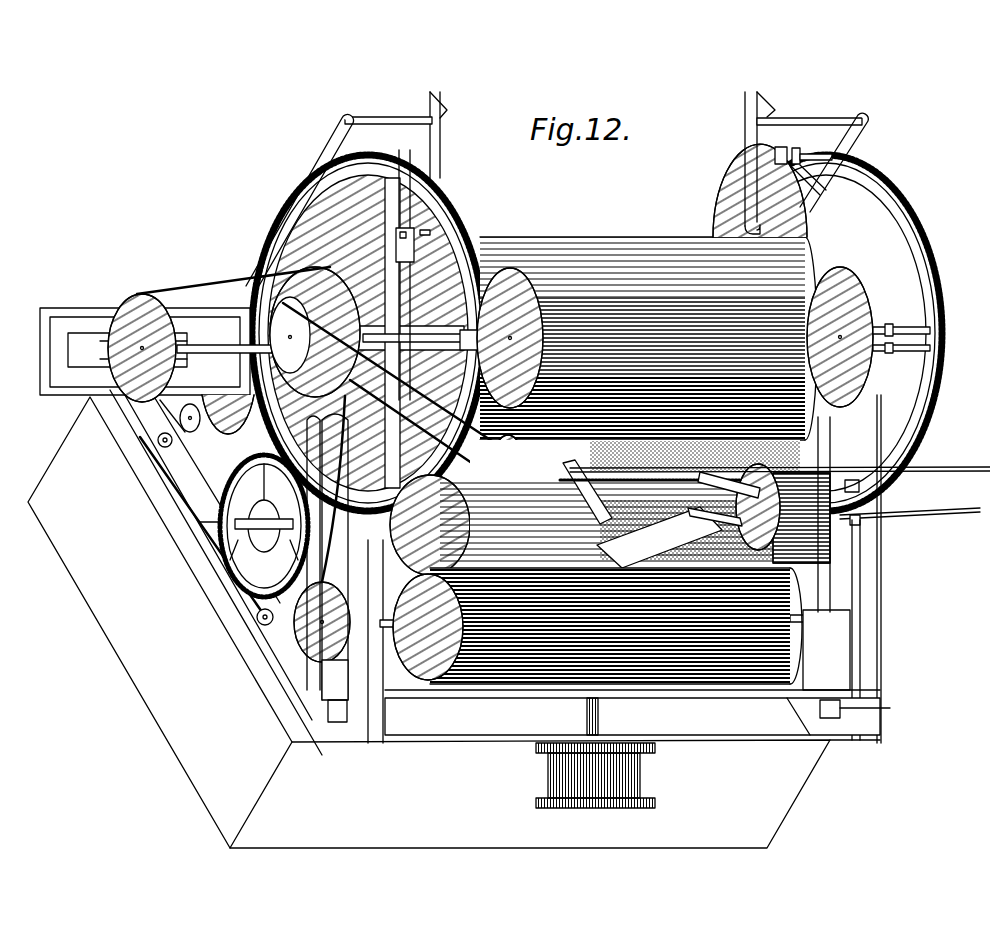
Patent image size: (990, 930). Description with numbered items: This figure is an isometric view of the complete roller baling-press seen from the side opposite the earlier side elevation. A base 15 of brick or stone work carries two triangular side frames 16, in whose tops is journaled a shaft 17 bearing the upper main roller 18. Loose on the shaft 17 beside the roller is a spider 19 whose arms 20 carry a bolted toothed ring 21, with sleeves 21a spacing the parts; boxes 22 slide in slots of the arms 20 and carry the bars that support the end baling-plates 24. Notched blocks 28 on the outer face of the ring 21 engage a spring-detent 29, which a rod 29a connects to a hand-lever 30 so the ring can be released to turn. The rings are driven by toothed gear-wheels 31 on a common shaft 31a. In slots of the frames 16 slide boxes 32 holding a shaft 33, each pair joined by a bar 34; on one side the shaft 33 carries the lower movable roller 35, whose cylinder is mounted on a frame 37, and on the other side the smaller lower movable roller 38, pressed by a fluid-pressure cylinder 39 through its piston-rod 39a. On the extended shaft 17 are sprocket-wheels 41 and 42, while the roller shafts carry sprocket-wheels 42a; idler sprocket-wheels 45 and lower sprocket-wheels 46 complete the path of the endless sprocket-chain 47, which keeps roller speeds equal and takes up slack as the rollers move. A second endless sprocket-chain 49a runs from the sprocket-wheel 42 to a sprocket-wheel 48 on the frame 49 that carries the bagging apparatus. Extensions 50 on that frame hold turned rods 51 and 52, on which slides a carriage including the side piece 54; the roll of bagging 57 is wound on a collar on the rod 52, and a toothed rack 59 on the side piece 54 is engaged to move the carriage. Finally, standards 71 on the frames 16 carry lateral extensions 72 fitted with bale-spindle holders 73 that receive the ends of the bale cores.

The base 15 is at (429, 622).
The side frames 16 is at (881, 410).
The shaft 17 is at (447, 328).
The upper main roller 18 is at (648, 338).
The spider 19 is at (435, 347).
The arms 20 is at (398, 183).
The toothed ring 21 is at (356, 158).
The sleeves 21a is at (818, 168).
The boxes 22 is at (396, 245).
The end baling-plates 24 is at (470, 197).
The notched blocks 28 is at (852, 486).
The spring-detent 29 is at (865, 532).
The rod 29a is at (860, 600).
The hand-lever 30 is at (886, 706).
The toothed gear-wheels 31 is at (280, 495).
The shaft 31a is at (250, 540).
The boxes 32 is at (578, 568).
The shaft 33 is at (200, 345).
The bar 34 is at (632, 654).
The lower movable roller 35 is at (243, 414).
The frame 37 is at (847, 742).
The lower movable roller 38 is at (616, 626).
The fluid-pressure cylinder 39 is at (641, 770).
The piston-rod 39a is at (599, 712).
The sprocket-wheel 41 is at (331, 268).
The sprocket-wheel 42 is at (270, 327).
The sprocket-wheels 42a is at (108, 350).
The sprocket-wheels 45 is at (236, 524).
The sprocket-wheels 46 is at (173, 441).
The endless sprocket-chain 47 is at (190, 289).
The sprocket-wheel 48 is at (510, 438).
The frame 49 is at (452, 510).
The endless sprocket-chain 49a is at (432, 410).
The extensions 50 is at (600, 526).
The turned rod 51 is at (780, 460).
The turned rod 52 is at (930, 510).
The side piece 54 is at (734, 507).
The roll of bagging 57 is at (690, 550).
The toothed rack 59 is at (660, 480).
The standards 71 is at (340, 127).
The lateral extensions 72 is at (380, 117).
The bale-spindle holders 73 is at (440, 136).